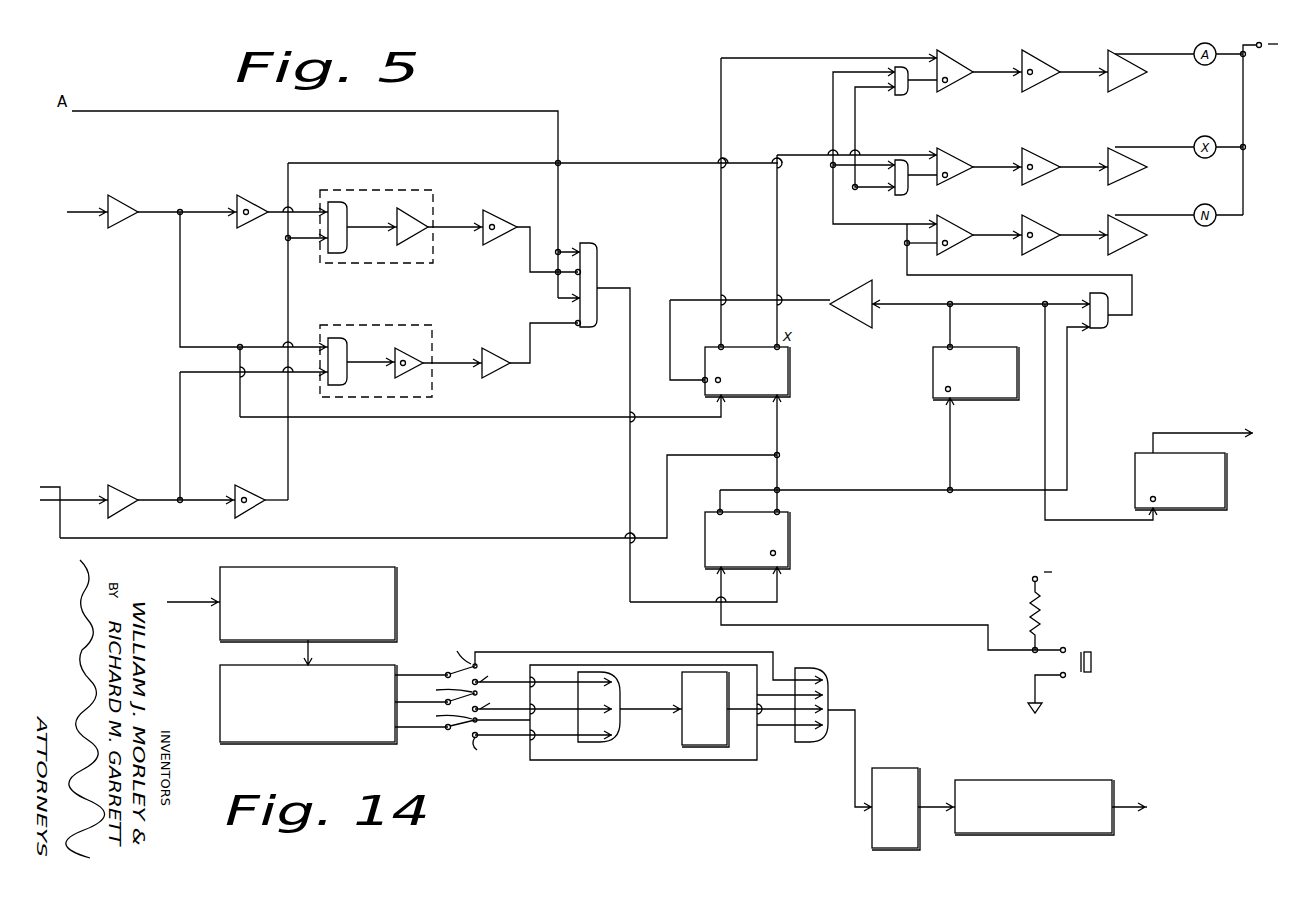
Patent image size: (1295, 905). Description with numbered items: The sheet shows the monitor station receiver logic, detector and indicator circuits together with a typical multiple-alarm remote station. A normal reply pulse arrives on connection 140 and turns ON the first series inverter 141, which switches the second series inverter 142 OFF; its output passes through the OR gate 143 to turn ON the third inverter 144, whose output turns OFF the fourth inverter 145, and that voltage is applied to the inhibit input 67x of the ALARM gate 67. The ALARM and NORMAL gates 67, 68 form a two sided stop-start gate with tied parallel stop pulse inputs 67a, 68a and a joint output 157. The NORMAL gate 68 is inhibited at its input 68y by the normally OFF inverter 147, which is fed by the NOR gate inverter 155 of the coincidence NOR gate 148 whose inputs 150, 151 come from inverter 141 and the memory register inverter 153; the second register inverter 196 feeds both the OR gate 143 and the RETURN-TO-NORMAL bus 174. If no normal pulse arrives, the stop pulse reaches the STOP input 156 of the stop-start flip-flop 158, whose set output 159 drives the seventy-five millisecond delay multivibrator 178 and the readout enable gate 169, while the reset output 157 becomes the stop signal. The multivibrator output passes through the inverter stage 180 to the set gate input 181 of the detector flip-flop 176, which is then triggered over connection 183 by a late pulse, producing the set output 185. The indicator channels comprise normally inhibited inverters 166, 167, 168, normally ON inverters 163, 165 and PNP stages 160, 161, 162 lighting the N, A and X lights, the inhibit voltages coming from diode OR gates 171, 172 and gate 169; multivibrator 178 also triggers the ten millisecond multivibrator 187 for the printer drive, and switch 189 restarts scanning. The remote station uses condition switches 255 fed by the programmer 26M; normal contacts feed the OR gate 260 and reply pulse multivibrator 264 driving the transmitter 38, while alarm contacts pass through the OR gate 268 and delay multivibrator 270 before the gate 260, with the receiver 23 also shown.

In FIG. 5, the connection 140 is at (88, 192).
In FIG. 5, the first series inverter 141 is at (140, 190).
In FIG. 5, the second series inverter 142 is at (262, 188).
In FIG. 5, the OR gate 143 is at (352, 188).
In FIG. 5, the third inverter 144 is at (415, 216).
In FIG. 5, the fourth inverter 145 is at (515, 210).
In FIG. 5, the parallel input 67a is at (565, 250).
In FIG. 5, the ALARM gate 67 is at (600, 257).
In FIG. 5, the inhibit voltage input 67x is at (545, 273).
In FIG. 5, the parallel input 68a is at (556, 299).
In FIG. 5, the NORMAL gate 68 is at (602, 318).
In FIG. 5, the RETURN-TO-NORMAL output bus 174 is at (650, 155).
In FIG. 5, the input 150 is at (302, 342).
In FIG. 5, the coincidence NOR gate 148 is at (420, 398).
In FIG. 5, the input 151 is at (310, 386).
In FIG. 5, the NOR gate inverter 155 is at (420, 353).
In FIG. 5, the inhibit input inverter 147 is at (490, 378).
In FIG. 5, the inhibit voltage input 68y is at (548, 340).
In FIG. 5, the memory register inverter 153 is at (132, 472).
In FIG. 5, the second register inverter 196 is at (252, 505).
In FIG. 5, the connection 183 is at (668, 418).
In FIG. 5, the joint output line 157 is at (630, 473).
In FIG. 5, the set output 159 is at (735, 488).
In FIG. 5, the set output 185 is at (722, 313).
In FIG. 5, the detector flip-flop circuit 176 is at (788, 380).
In FIG. 5, the set gate input 181 is at (670, 384).
In FIG. 5, the inverter stage 180 is at (860, 328).
In FIG. 5, the stop-start flip-flop circuit 158 is at (788, 540).
In FIG. 5, the STOP input 156 is at (780, 604).
In FIG. 5, the switch 189 is at (1084, 643).
In FIG. 5, the delay multivibrator 178 is at (975, 399).
In FIG. 5, the readout enable OR gate 169 is at (1097, 331).
In FIG. 5, the delay multivibrator 187 is at (1225, 487).
In FIG. 5, the inhibit inverter 167 is at (950, 60).
In FIG. 5, the diode OR gate 171 is at (894, 98).
In FIG. 5, the delay multivibrator 264 is at (1040, 66).
In FIG. 14, the delay multivibrator 264 is at (900, 770).
In FIG. 5, the PNP inverter stage 161 is at (1132, 80).
In FIG. 5, the inhibit inverter 168 is at (968, 142).
In FIG. 5, the diode OR gate 172 is at (903, 196).
In FIG. 5, the normally ON inverter 165 is at (1060, 147).
In FIG. 5, the PNP inverter stage 162 is at (1118, 152).
In FIG. 5, the inhibit inverter 166 is at (955, 222).
In FIG. 5, the normally ON inverter 163 is at (1035, 220).
In FIG. 5, the PNP inverter stage 160 is at (1118, 212).
In FIG. 14, the interrogation pulse count 23 is at (396, 592).
In FIG. 14, the programmer 26M is at (372, 744).
In FIG. 14, the condition switches 255 is at (479, 632).
In FIG. 14, the delay input OR gate 268 is at (595, 741).
In FIG. 14, the alarm delay multivibrator 270 is at (684, 738).
In FIG. 14, the OR gate 260 is at (832, 672).
In FIG. 14, the remote station transmitter 38 is at (1070, 780).